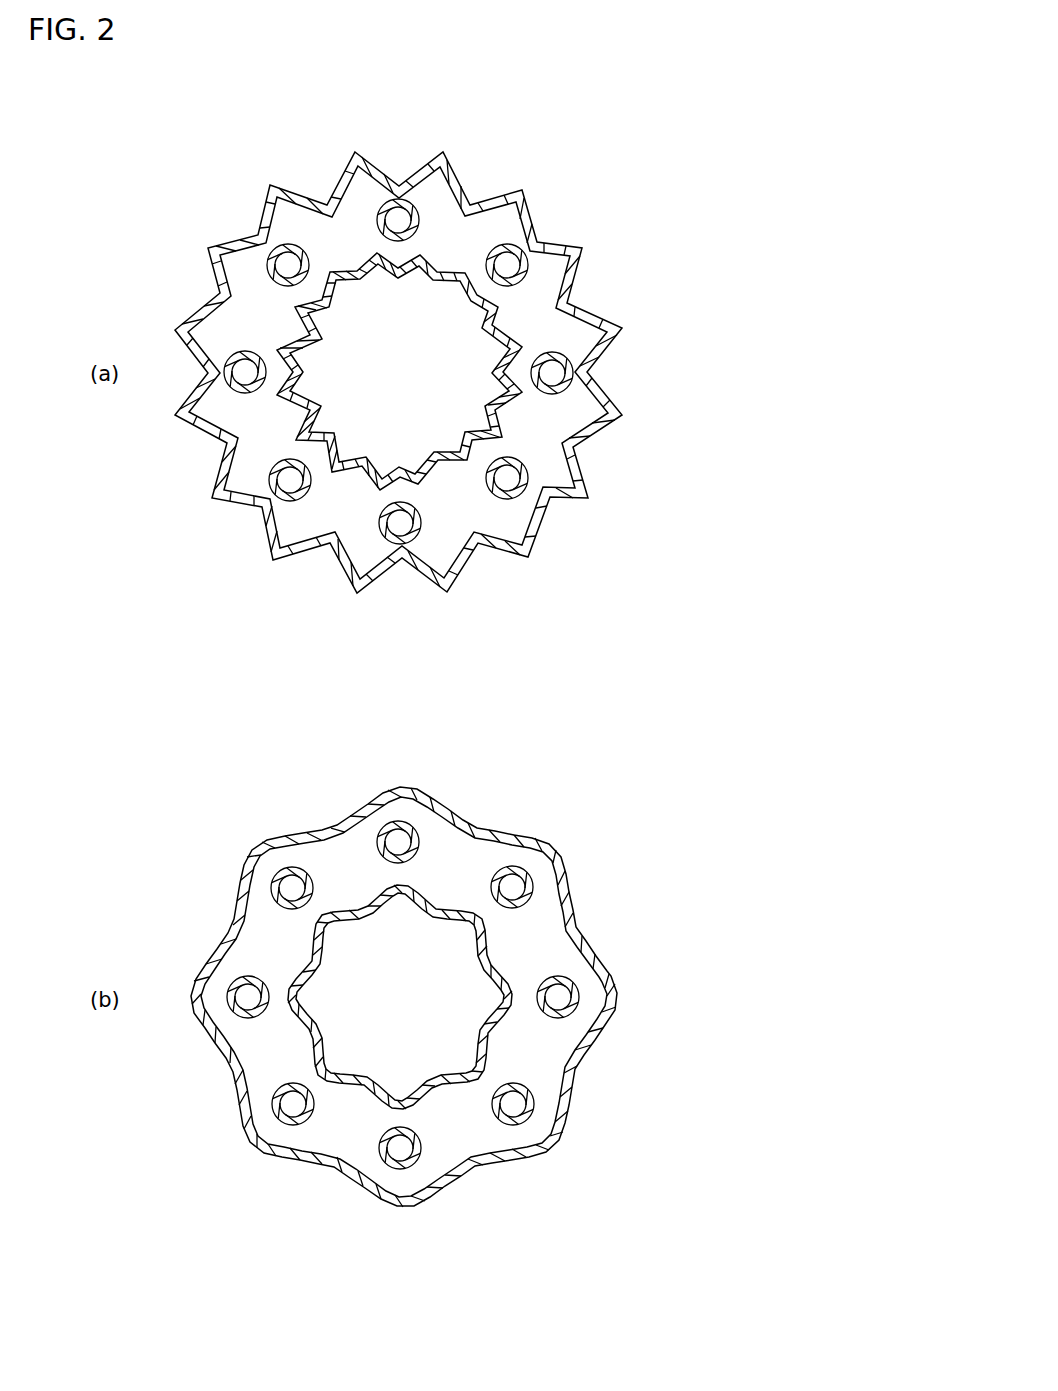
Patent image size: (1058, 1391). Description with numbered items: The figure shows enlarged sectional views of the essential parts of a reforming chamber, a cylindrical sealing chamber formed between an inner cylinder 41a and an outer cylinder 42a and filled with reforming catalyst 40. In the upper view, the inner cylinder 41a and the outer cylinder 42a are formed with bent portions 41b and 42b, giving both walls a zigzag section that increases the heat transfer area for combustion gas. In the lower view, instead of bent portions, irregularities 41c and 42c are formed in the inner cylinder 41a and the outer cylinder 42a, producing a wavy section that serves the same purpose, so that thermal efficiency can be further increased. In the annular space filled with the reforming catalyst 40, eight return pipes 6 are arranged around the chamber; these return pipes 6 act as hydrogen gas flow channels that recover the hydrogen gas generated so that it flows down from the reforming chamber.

The reforming catalyst 40 is at (530, 662).
The outer cylinder 42a is at (530, 660).
The bent portions 42b is at (444, 152).
The irregularities 42c is at (580, 927).
The inner cylinder 41a is at (577, 732).
The bent portions 41b is at (440, 470).
The irregularities 41c is at (490, 1040).
The return pipes 6 is at (570, 362).